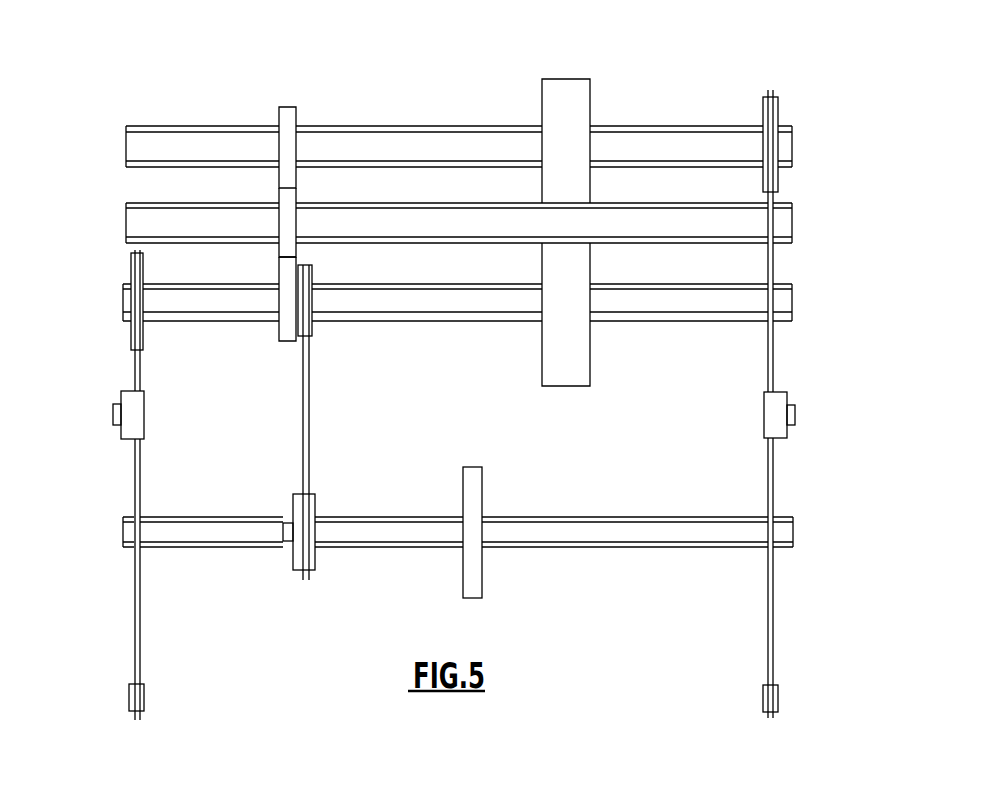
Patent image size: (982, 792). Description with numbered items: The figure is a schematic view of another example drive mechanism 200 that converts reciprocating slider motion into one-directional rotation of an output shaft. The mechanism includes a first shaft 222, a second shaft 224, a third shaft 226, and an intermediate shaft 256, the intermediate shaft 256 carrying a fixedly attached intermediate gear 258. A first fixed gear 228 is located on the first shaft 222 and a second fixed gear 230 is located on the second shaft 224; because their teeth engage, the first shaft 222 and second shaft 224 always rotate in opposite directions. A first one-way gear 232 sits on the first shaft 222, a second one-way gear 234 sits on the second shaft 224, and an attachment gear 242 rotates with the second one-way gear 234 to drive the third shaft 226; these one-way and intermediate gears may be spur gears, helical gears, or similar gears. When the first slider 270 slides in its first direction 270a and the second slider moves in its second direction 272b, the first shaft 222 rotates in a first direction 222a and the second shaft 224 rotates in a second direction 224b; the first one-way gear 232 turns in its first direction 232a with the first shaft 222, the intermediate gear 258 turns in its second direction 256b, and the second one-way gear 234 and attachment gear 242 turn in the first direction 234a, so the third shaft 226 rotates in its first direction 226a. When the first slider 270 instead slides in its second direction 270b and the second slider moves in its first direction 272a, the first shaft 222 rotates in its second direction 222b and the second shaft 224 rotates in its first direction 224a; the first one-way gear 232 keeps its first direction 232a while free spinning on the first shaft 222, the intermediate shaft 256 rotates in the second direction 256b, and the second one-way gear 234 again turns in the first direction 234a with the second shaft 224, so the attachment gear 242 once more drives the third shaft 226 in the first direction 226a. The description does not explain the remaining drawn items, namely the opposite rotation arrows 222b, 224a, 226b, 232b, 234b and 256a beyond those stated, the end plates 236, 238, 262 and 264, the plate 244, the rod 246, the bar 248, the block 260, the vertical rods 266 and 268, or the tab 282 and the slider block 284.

The drive mechanism 200 is at (202, 59).
The first shaft 222 is at (642, 126).
The first direction 222a is at (110, 187).
The second direction 222b is at (84, 186).
The second shaft 224 is at (793, 315).
The first direction 224a is at (110, 343).
The second direction 224b is at (92, 356).
The third shaft 226 is at (648, 547).
The first direction 226a is at (108, 572).
The second rotation direction of shaft 226 226b is at (84, 582).
The first fixed gear 228 is at (560, 79).
The second fixed gear 230 is at (563, 386).
The first one-way gear 232 is at (296, 112).
The first direction 232a is at (240, 187).
The second rotation direction of bar 232 232b is at (213, 186).
The second one-way gear 234 is at (287, 342).
The first direction 234a is at (253, 343).
The second rotation direction of bar 234 234b is at (228, 346).
The right upper bearing plate 236 is at (778, 100).
The left bearing plate 238 is at (131, 255).
The attachment gear 242 is at (312, 336).
The lower plate on rod 246 244 is at (315, 572).
The vertical connecting rod 246 is at (309, 390).
The lower bar 248 is at (482, 596).
The intermediate shaft 256 is at (613, 200).
The first rotation direction of shaft 256 256a is at (797, 262).
The second direction 256b is at (818, 275).
The intermediate gear 258 is at (296, 195).
The coupling block 260 is at (283, 532).
The right lower end plate 262 is at (778, 705).
The left lower end plate 264 is at (144, 697).
The right vertical rod 266 is at (774, 625).
The left vertical rod 268 is at (134, 607).
The first slider 270 is at (787, 392).
The first direction 270a is at (735, 435).
The second direction 270b is at (736, 457).
The first direction 272a is at (172, 437).
The second direction 272b is at (172, 457).
The right slider tab 282 is at (795, 418).
The left slider block 284 is at (113, 414).